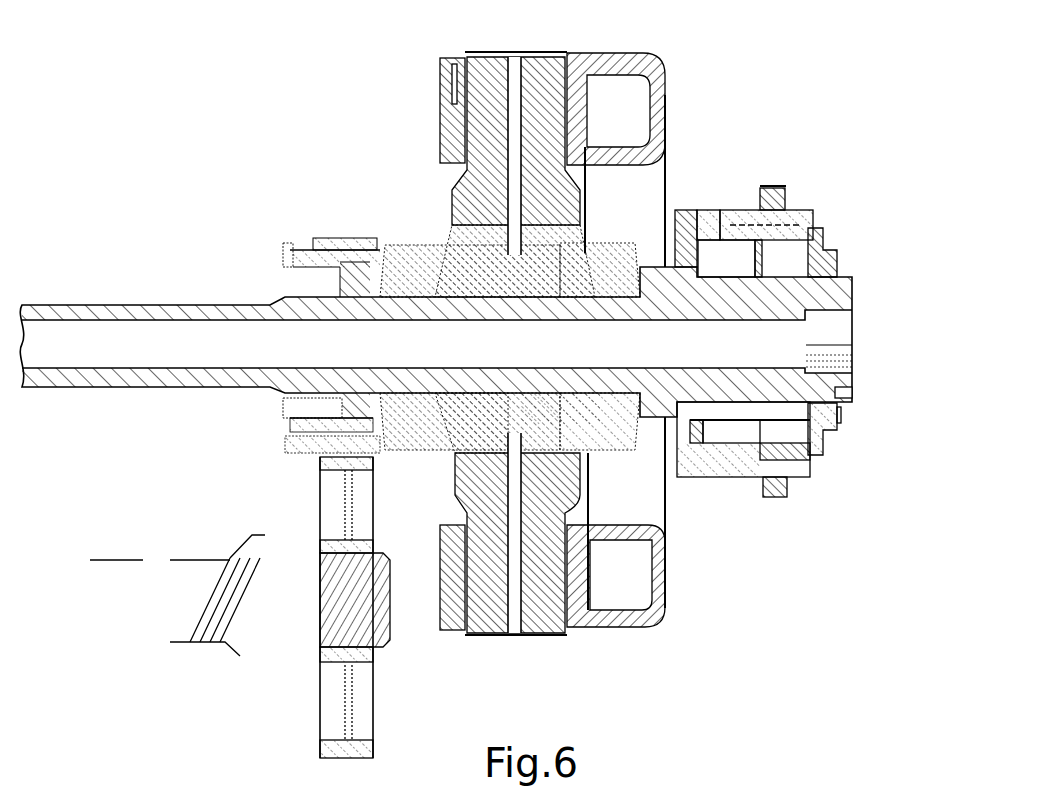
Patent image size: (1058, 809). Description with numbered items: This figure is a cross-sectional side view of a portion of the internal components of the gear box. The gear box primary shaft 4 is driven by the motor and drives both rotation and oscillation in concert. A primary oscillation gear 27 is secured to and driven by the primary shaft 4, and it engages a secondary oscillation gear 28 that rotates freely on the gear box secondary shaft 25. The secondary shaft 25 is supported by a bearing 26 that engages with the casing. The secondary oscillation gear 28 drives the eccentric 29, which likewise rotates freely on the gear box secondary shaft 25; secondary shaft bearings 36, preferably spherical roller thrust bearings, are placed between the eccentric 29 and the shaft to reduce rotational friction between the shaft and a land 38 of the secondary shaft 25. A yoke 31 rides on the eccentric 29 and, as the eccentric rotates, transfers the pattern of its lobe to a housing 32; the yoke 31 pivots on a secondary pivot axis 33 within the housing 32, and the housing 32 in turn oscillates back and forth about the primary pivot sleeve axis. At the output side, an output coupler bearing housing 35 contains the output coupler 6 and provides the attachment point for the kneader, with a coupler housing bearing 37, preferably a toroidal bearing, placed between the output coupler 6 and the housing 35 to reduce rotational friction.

The gear box secondary shaft 25 is at (165, 393).
The output coupler 6 is at (852, 343).
The secondary oscillation gear 28 is at (335, 240).
The eccentric 29 is at (432, 243).
The secondary shaft bearings 36 is at (612, 243).
The yoke 31 is at (455, 208).
The secondary pivot axis 33 is at (490, 52).
The housing 32 is at (660, 190).
The land 38 is at (666, 485).
The coupler housing bearing 37 is at (715, 225).
The output coupler bearing housing 35 is at (735, 220).
The primary oscillation gear 27 is at (330, 757).
The bearing 26 is at (238, 652).
The gear box primary shaft 4 is at (177, 595).